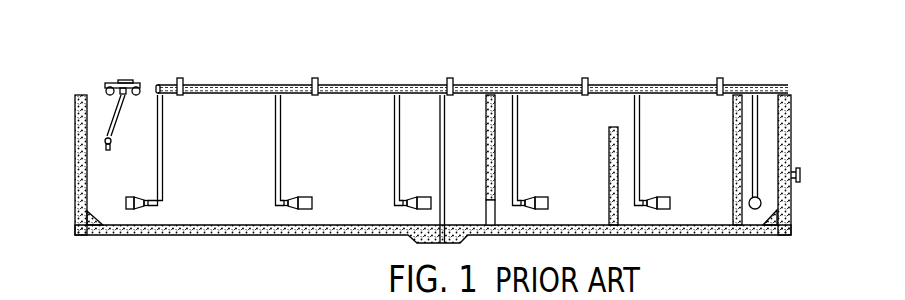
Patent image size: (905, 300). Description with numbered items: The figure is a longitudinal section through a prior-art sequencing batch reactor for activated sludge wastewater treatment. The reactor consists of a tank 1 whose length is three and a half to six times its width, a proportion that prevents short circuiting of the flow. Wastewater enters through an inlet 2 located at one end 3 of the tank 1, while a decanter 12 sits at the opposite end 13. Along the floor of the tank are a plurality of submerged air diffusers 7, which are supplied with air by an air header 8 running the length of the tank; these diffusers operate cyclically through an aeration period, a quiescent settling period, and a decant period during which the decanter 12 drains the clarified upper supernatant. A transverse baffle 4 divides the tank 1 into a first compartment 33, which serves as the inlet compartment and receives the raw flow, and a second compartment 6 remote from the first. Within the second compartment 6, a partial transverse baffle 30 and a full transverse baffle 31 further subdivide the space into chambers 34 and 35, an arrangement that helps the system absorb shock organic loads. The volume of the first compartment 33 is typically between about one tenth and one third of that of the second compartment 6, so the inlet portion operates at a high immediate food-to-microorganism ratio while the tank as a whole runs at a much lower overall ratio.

The tank 1 is at (702, 58).
The inlet 2 is at (801, 175).
The end 3 is at (791, 145).
The transverse baffle 4 is at (733, 128).
The second compartment 6 is at (349, 170).
The submerged air diffuser 7 is at (131, 196).
The air header 8 is at (163, 160).
The decanter 12 is at (114, 80).
The other end 13 is at (75, 162).
The partial transverse baffle 30 is at (609, 133).
The full transverse baffle 31 is at (486, 112).
The first compartment 33 is at (767, 110).
The chamber 34 is at (705, 170).
The chamber 35 is at (553, 170).